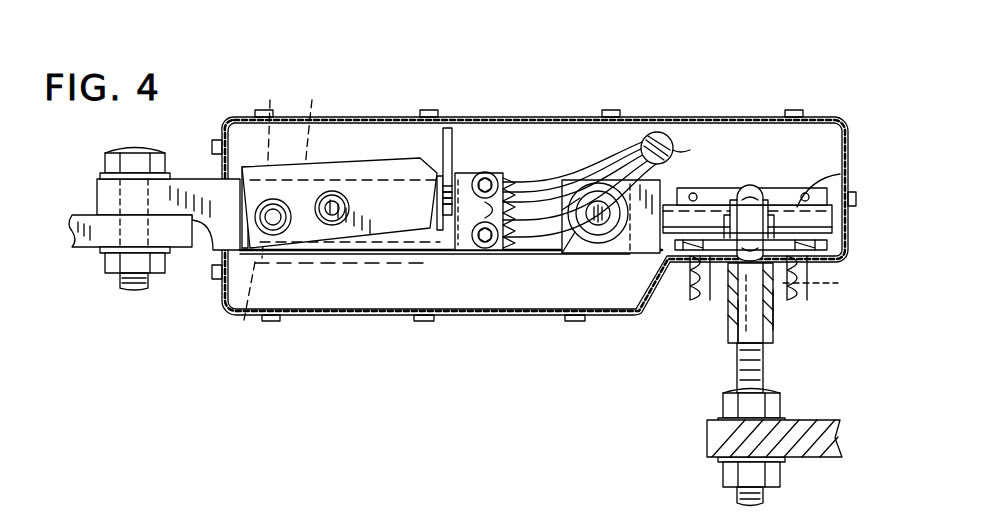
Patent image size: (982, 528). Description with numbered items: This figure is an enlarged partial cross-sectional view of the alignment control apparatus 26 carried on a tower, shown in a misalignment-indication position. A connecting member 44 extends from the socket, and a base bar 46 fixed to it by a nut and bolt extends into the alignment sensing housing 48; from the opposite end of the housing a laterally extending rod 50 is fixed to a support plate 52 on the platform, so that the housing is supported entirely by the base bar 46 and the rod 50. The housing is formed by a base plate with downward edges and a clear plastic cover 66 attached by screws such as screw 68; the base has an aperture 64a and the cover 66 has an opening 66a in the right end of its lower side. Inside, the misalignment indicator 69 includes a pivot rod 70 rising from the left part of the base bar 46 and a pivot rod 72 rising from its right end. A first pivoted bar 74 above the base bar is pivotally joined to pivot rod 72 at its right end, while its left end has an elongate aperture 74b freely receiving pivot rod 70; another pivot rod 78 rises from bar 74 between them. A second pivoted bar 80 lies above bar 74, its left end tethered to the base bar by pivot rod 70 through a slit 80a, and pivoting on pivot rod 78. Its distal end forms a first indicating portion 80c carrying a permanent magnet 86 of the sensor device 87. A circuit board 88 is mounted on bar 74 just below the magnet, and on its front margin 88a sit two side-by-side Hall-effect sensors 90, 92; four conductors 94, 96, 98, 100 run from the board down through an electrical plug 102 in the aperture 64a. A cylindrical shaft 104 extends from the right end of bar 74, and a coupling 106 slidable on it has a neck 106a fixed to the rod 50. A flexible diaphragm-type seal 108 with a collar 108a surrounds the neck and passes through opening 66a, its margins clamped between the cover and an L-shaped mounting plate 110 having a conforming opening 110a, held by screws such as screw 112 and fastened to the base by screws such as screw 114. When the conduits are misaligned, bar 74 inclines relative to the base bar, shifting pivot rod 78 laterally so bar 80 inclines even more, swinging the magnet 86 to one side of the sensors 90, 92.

The alignment control apparatus 26 is at (775, 92).
The connecting member 44 is at (80, 215).
The base bar 46 is at (190, 179).
The alignment sensing housing 48 is at (540, 102).
The rod 50 is at (735, 497).
The support plate 52 is at (815, 450).
The aperture 64a is at (690, 153).
The cover 66 is at (568, 114).
The opening 66a is at (879, 292).
The screw 68 is at (212, 150).
The misalignment indicator 69 is at (428, 82).
The pivot rod 70 is at (275, 220).
The pivot rod 72 is at (600, 220).
The first pivoted bar 74 is at (256, 272).
The elongate aperture 74b is at (280, 102).
The pivot rod 78 is at (332, 216).
The second pivoted bar 80 is at (406, 158).
The slit 80a is at (326, 102).
The first indicating portion 80c is at (440, 178).
The permanent magnet 86 is at (449, 128).
The sensor device 87 is at (508, 262).
The circuit board 88 is at (486, 172).
The front margin 88a is at (442, 210).
The Hall-effect sensor 90 is at (459, 180).
The Hall-effect sensor 92 is at (500, 180).
The conductor 94 is at (528, 182).
The conductor 96 is at (556, 185).
The conductor 98 is at (527, 217).
The conductor 100 is at (546, 237).
The electrical plug 102 is at (654, 132).
The cylindrical shaft 104 is at (790, 205).
The coupling 106 is at (760, 186).
The neck 106a is at (748, 330).
The flexible diaphragm-type seal 108 is at (786, 300).
The collar 108a is at (776, 326).
The mounting plate 110 is at (628, 262).
The opening 110a is at (712, 285).
The screw 112 is at (690, 266).
The screw 114 is at (840, 174).